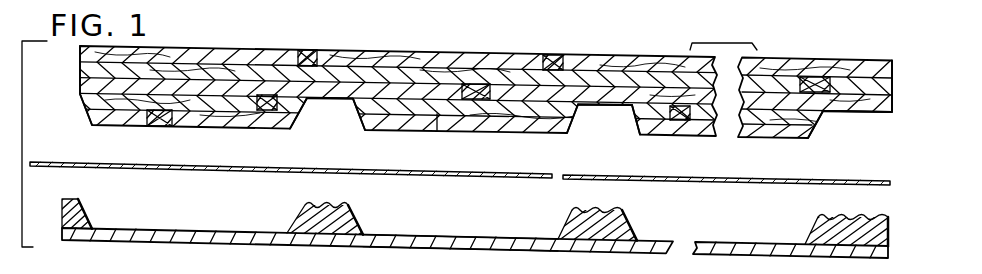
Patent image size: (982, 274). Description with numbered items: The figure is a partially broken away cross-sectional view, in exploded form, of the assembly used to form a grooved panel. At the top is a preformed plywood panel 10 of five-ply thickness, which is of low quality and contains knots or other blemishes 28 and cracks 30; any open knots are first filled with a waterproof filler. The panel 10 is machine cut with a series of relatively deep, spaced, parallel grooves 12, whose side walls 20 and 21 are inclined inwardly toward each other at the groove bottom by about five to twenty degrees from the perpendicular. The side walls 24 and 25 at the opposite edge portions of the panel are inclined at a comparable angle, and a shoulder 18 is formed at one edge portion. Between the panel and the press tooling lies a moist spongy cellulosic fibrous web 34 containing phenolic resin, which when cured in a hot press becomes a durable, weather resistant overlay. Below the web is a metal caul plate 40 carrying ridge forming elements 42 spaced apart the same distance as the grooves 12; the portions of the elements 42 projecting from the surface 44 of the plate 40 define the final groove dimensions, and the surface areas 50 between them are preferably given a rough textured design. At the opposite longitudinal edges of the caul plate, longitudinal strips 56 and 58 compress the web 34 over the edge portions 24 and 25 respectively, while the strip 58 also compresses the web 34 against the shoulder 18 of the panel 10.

The plywood panel 10 is at (398, 50).
The grooves 12 is at (325, 112).
The shoulder 18 is at (856, 114).
The side wall of groove 20 is at (292, 123).
The side wall of groove 21 is at (357, 120).
The side wall at edge portion 24 is at (85, 118).
The side wall at edge portion 25 is at (816, 122).
The knots or other blemishes 28 is at (157, 124).
The cracks 30 is at (437, 131).
The cellulosic fibrous web 34 is at (518, 174).
The caul plate 40 is at (422, 236).
The ridge forming elements 42 is at (357, 217).
The surface of caul plate 44 is at (504, 233).
The surface areas 50 is at (172, 228).
The longitudinal strip 56 is at (87, 207).
The longitudinal strip 58 is at (816, 224).